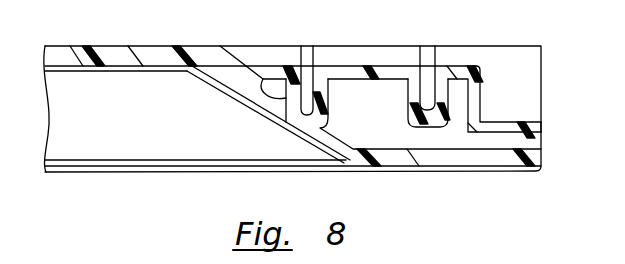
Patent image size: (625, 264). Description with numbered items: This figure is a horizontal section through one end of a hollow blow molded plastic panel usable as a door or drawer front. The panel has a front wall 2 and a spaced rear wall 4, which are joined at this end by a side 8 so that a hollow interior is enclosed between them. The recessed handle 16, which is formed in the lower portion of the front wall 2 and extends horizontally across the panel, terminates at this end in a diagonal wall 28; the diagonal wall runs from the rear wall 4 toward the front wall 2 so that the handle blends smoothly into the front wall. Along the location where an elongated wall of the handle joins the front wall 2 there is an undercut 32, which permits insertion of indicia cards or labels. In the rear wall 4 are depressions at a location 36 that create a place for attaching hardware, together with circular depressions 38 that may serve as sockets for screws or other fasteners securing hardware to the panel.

The front wall 2 is at (112, 174).
The rear wall 4 is at (123, 46).
The side 8 is at (542, 140).
The recessed handle 16 is at (142, 178).
The diagonal wall 28 is at (258, 112).
The undercut 32 is at (344, 166).
The depression location 36 is at (382, 66).
The circular depression 38 is at (312, 70).